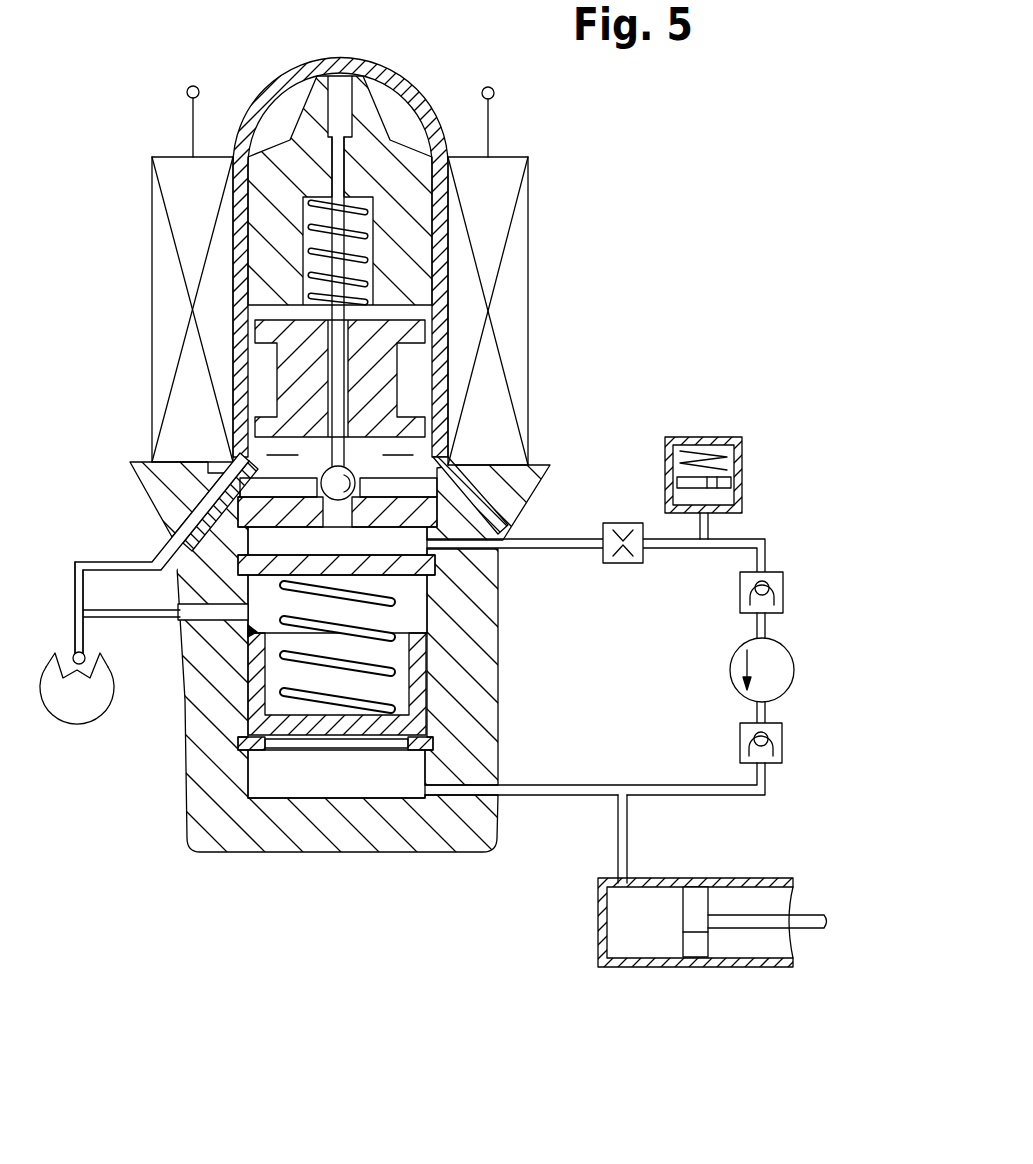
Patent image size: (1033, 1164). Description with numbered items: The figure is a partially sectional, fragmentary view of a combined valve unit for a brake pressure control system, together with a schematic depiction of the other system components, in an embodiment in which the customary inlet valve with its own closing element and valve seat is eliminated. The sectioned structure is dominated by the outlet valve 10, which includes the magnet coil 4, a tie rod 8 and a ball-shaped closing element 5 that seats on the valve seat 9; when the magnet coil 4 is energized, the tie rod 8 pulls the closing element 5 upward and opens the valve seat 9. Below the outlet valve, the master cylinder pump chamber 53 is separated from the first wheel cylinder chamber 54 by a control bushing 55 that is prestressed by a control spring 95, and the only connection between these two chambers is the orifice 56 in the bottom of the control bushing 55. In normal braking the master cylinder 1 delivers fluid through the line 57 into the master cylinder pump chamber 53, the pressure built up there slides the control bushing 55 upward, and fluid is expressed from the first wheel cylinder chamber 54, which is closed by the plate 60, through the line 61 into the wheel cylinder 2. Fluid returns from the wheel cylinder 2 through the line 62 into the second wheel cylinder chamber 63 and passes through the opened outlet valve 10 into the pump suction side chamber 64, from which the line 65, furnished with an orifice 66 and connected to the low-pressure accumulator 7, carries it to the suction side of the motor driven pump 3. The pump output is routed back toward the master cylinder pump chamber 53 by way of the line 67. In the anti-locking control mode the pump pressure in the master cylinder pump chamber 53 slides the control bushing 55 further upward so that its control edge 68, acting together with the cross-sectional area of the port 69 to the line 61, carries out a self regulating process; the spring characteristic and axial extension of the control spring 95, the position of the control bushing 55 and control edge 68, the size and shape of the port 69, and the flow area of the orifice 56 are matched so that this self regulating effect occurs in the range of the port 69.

The master cylinder 1 is at (750, 883).
The wheel cylinder 2 is at (74, 655).
The motor driven pump 3 is at (781, 675).
The magnet coil 4 is at (524, 216).
The closing element 5 is at (374, 458).
The low-pressure accumulator 7 is at (742, 450).
The tie rod 8 is at (342, 370).
The valve seat 9 is at (352, 495).
The outlet valve 10 is at (312, 490).
The master cylinder pump chamber 53 is at (318, 782).
The first wheel cylinder chamber 54 is at (396, 657).
The control bushing 55 is at (412, 704).
The orifice 56 is at (387, 737).
The line 57 is at (628, 838).
The plate 60 is at (412, 570).
The line 61 is at (120, 608).
The line 62 is at (118, 562).
The second wheel cylinder chamber 63 is at (397, 463).
The pump suction side chamber 64 is at (410, 540).
The line 65 is at (670, 550).
The orifice 66 is at (625, 565).
The pump line 67 is at (700, 787).
The control edge 68 is at (250, 629).
The port 69 is at (250, 615).
The control spring 95 is at (400, 612).